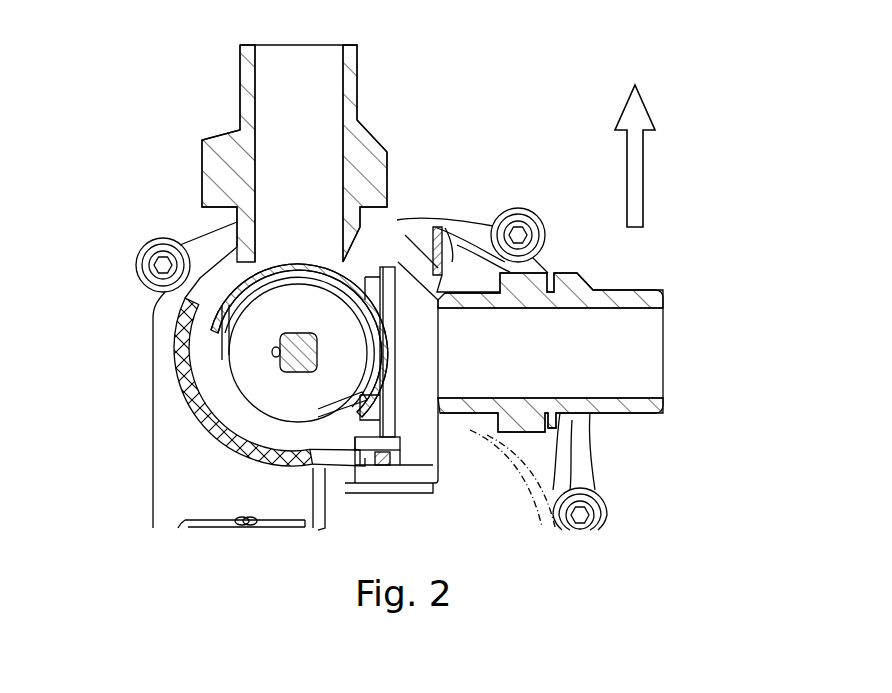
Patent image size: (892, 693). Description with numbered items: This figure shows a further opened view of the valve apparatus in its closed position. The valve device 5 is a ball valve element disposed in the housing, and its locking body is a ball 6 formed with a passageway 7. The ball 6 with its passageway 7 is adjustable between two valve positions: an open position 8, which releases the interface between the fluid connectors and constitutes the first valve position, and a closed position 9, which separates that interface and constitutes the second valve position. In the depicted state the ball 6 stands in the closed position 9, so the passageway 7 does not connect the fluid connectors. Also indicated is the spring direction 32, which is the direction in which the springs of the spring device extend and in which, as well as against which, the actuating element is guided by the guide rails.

The valve device 5 is at (331, 276).
The ball 6 is at (222, 362).
The passageway 7 is at (253, 385).
The open position 8 is at (300, 236).
The closed position 9 is at (390, 373).
The spring direction 32 is at (650, 172).